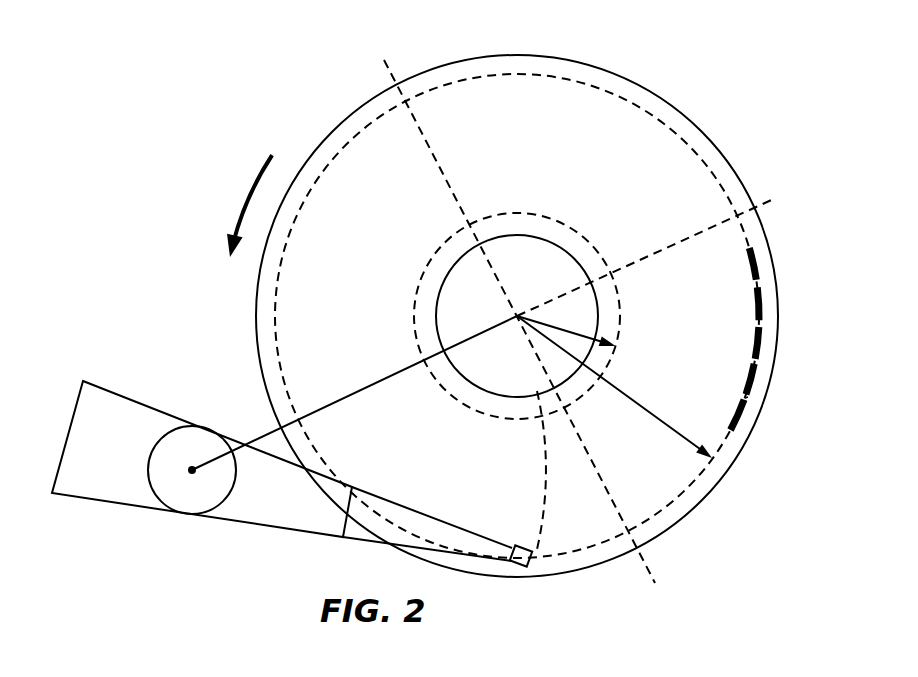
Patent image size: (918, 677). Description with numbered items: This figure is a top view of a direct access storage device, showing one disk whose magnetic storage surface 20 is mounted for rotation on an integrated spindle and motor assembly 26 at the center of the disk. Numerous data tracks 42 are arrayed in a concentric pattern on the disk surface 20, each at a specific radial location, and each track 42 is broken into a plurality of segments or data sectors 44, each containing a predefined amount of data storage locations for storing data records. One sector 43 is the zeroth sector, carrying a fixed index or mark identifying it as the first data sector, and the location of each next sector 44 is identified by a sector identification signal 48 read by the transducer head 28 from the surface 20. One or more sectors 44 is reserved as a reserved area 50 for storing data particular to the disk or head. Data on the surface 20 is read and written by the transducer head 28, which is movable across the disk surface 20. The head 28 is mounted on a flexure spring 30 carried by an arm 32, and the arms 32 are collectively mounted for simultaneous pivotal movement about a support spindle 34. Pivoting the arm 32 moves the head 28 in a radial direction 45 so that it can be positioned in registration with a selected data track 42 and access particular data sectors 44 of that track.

The magnetic storage surface 20 is at (576, 104).
The integrated spindle and motor assembly 26 is at (527, 270).
The data tracks 42 is at (734, 251).
The reserved area 50 is at (761, 268).
The data sectors 44 is at (763, 307).
The sector identification signal (SID) 48 is at (744, 401).
The sector (SECTOR 0) 43 is at (740, 416).
The radial direction 45 is at (247, 195).
The support spindle 34 is at (192, 473).
The arms 32 is at (280, 511).
The flexure springs 30 is at (453, 538).
The transducer head 28 is at (519, 562).